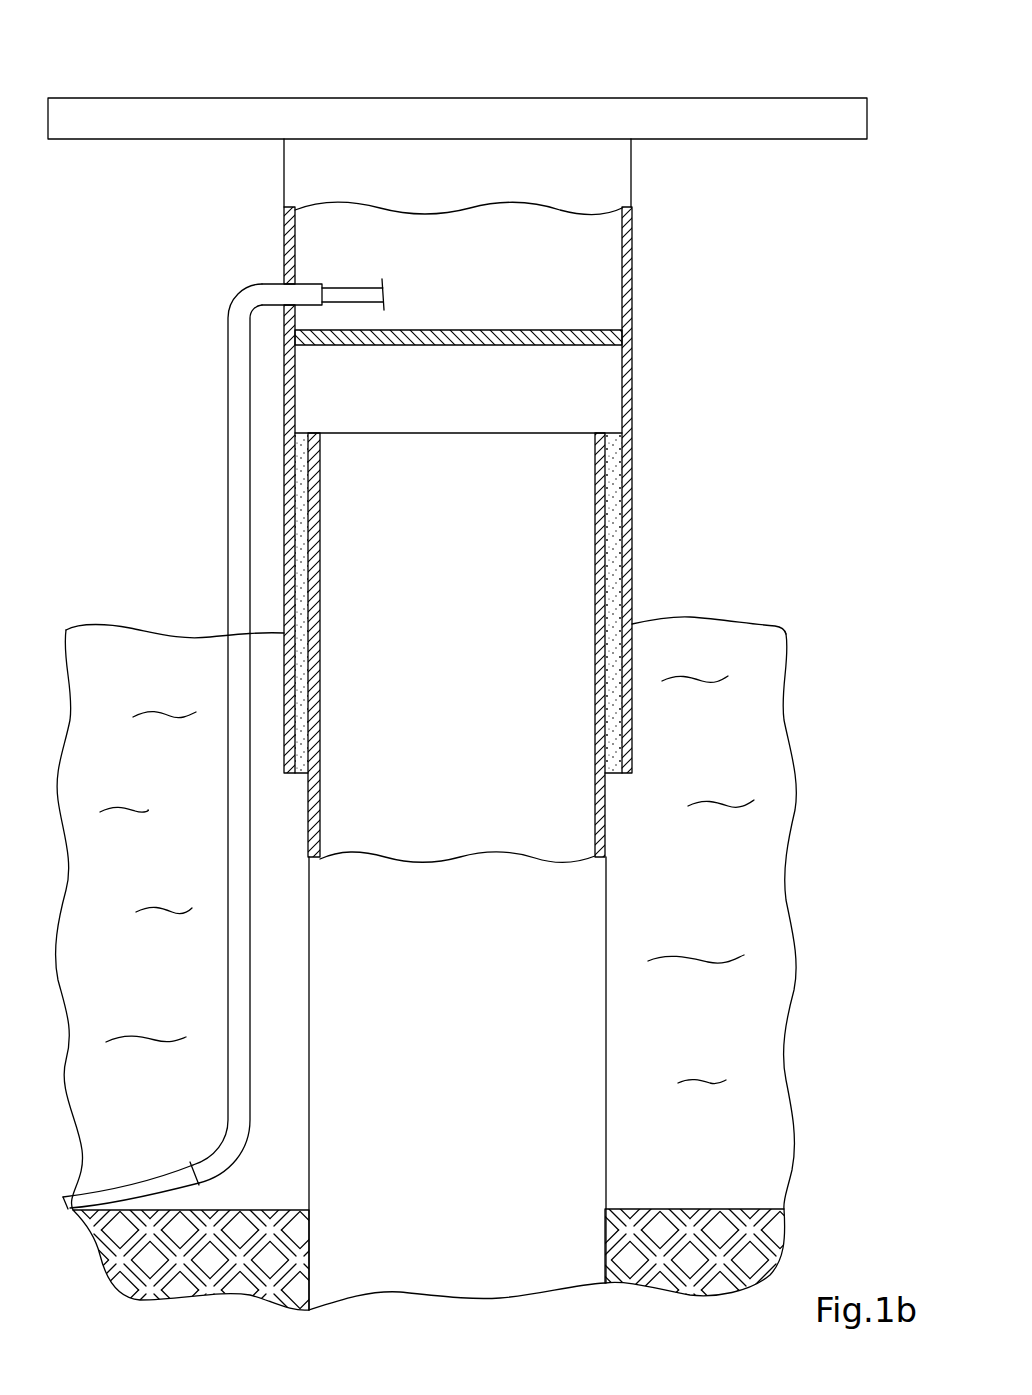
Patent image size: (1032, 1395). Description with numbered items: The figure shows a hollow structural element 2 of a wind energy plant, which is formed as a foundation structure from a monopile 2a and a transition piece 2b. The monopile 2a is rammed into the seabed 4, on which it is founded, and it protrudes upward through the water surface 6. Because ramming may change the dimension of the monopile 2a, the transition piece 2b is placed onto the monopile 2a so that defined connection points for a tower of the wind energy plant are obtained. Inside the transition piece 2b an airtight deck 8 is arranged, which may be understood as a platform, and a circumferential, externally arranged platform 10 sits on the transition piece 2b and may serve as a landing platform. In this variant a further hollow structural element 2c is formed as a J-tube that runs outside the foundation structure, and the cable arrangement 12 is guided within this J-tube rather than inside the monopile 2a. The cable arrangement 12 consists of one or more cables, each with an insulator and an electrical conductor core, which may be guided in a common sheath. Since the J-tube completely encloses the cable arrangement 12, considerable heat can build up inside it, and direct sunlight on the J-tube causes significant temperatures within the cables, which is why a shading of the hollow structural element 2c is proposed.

The platform 10 is at (737, 117).
The hollow structural element 2 is at (442, 724).
The monopile 2a is at (607, 833).
The transition piece 2b is at (630, 377).
The hollow structural element (J-tube) 2c is at (234, 413).
The seabed 4 is at (722, 1237).
The water surface 6 is at (733, 622).
The airtight deck 8 is at (538, 336).
The cable arrangement 12 is at (352, 296).